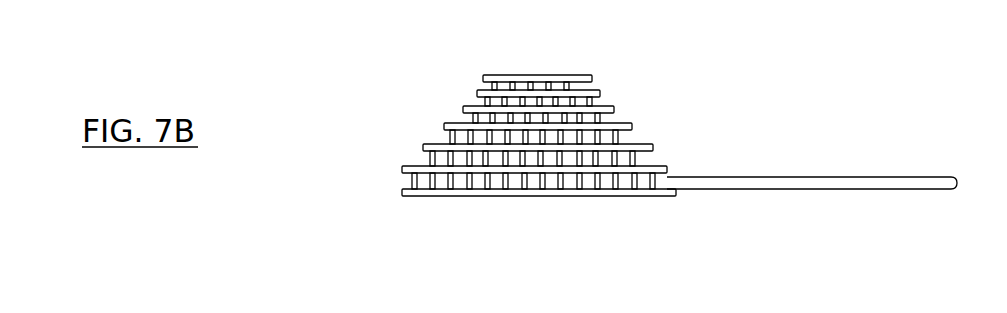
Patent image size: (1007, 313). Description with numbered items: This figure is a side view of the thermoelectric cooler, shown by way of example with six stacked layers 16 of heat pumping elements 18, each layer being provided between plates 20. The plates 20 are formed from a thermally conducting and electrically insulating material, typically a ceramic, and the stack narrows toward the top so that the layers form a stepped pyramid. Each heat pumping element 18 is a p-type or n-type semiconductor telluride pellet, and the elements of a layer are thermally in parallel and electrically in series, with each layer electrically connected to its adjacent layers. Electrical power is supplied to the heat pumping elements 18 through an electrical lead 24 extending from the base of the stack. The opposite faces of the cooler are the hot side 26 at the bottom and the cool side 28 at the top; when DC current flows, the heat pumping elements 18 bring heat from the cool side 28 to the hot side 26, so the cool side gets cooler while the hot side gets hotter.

The stacked layers 16 is at (458, 114).
The heat pumping elements 18 is at (620, 137).
The plates 20 is at (569, 76).
The electrical leads 24 is at (822, 190).
The hot side 26 is at (572, 197).
The cool side 28 is at (526, 72).